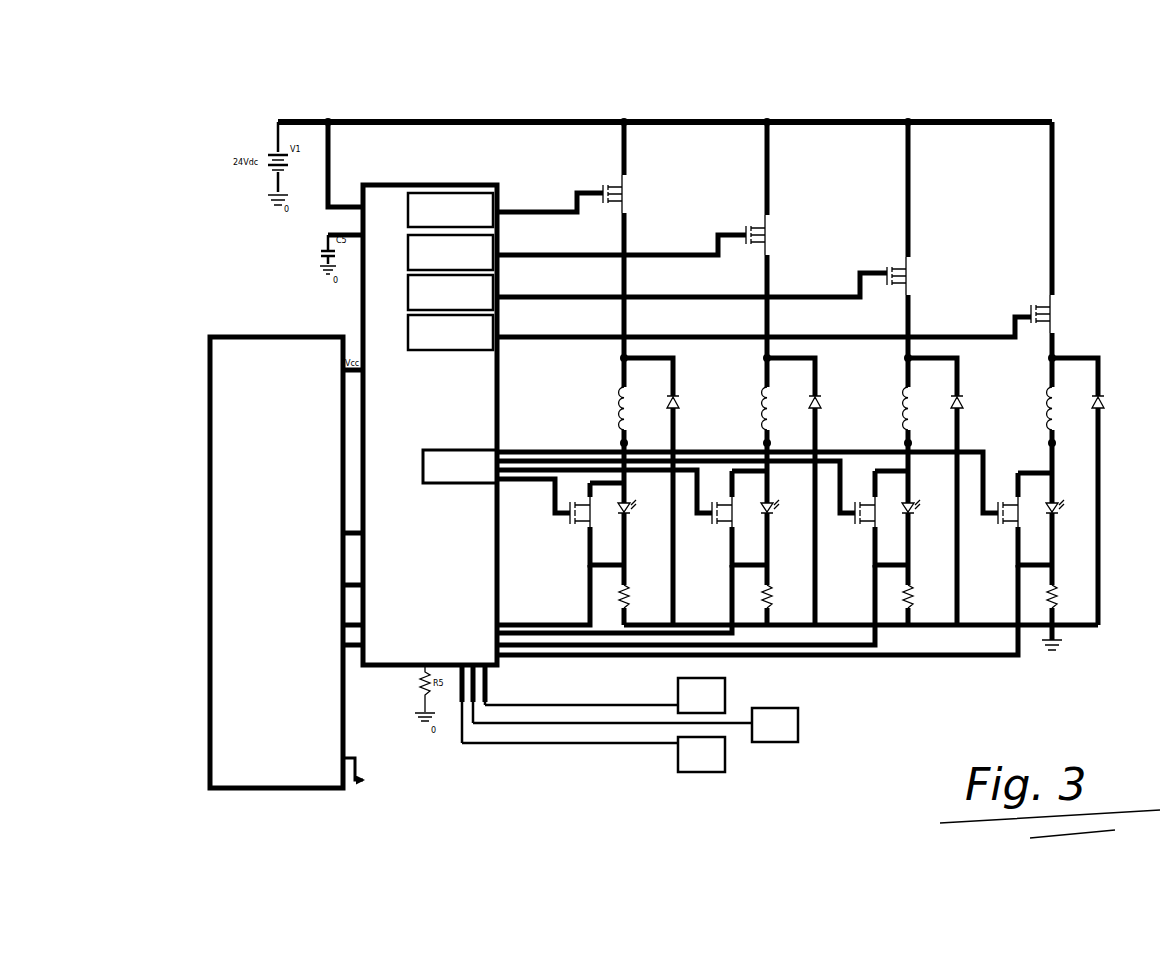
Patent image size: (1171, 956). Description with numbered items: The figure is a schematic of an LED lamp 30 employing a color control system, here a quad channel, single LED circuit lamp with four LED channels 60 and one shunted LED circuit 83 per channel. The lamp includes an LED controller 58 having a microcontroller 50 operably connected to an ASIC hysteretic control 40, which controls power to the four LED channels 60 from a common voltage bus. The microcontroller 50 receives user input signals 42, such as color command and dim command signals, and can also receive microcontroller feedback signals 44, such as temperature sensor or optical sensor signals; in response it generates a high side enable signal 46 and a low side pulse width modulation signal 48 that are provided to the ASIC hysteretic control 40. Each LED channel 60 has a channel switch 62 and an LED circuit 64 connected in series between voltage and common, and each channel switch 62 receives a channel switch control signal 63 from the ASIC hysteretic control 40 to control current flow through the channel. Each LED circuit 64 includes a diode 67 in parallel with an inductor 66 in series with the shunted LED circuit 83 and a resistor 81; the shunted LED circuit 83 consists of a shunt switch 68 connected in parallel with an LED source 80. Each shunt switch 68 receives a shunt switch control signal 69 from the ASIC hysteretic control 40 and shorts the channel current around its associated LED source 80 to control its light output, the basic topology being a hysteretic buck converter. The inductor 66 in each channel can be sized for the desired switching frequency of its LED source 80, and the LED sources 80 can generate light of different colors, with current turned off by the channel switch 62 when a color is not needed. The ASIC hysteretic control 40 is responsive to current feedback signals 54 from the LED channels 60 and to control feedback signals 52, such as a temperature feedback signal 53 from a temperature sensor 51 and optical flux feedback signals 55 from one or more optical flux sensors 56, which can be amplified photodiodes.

The LED lamp 30 is at (520, 60).
The ASIC hysteretic control 40 is at (382, 295).
The user input signals 42 is at (470, 793).
The microcontroller feedback signals 44 is at (289, 660).
The high side enable signal 46 is at (384, 540).
The low side pulse width modulation signal 48 is at (384, 592).
The microcontroller 50 is at (222, 383).
The temperature sensor 51 is at (718, 690).
The control feedback signals 52 is at (556, 770).
The temperature feedback signal 53 is at (515, 705).
The current feedback signals 54 is at (557, 620).
The optical flux feedback signals 55 is at (500, 728).
The optical flux sensor 56 is at (785, 722).
The LED controller 58 is at (238, 298).
The LED channel 60 is at (625, 103).
The channel switch 62 is at (636, 190).
The channel switch control signal 63 is at (553, 210).
The LED circuit 64 is at (616, 360).
The inductor 66 is at (618, 416).
The diode 67 is at (683, 400).
The shunt switch 68 is at (575, 530).
The shunt switch control signal 69 is at (533, 450).
The LED source 80 is at (638, 512).
The resistor 81 is at (628, 592).
The shunted LED circuit 83 is at (578, 548).